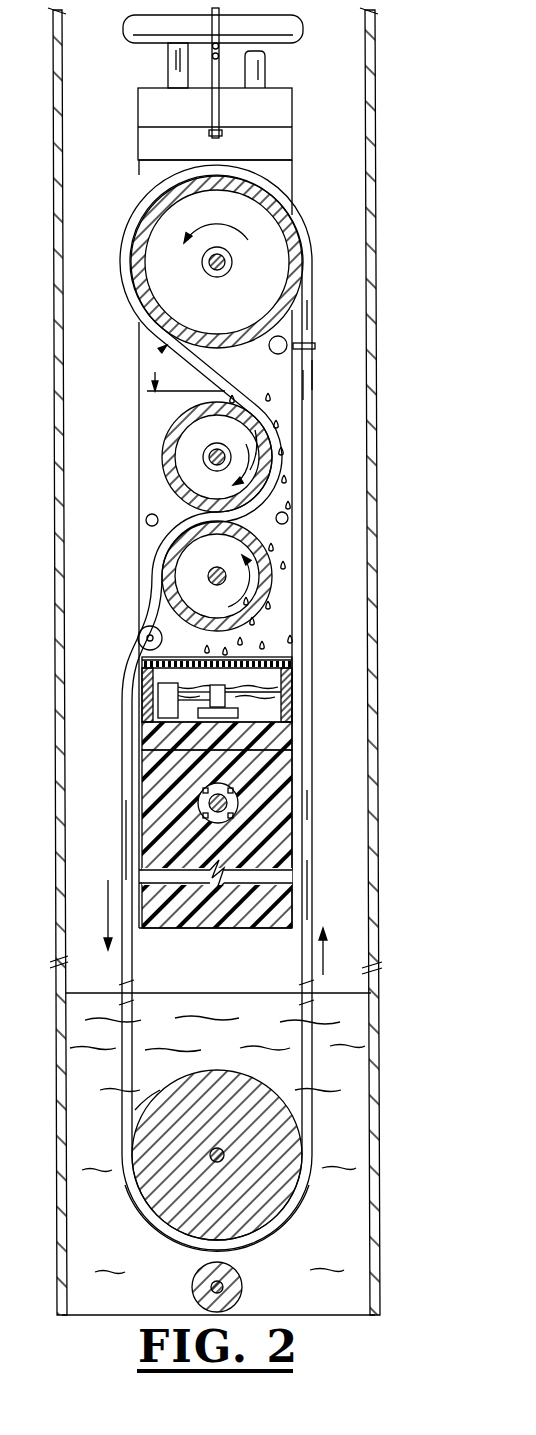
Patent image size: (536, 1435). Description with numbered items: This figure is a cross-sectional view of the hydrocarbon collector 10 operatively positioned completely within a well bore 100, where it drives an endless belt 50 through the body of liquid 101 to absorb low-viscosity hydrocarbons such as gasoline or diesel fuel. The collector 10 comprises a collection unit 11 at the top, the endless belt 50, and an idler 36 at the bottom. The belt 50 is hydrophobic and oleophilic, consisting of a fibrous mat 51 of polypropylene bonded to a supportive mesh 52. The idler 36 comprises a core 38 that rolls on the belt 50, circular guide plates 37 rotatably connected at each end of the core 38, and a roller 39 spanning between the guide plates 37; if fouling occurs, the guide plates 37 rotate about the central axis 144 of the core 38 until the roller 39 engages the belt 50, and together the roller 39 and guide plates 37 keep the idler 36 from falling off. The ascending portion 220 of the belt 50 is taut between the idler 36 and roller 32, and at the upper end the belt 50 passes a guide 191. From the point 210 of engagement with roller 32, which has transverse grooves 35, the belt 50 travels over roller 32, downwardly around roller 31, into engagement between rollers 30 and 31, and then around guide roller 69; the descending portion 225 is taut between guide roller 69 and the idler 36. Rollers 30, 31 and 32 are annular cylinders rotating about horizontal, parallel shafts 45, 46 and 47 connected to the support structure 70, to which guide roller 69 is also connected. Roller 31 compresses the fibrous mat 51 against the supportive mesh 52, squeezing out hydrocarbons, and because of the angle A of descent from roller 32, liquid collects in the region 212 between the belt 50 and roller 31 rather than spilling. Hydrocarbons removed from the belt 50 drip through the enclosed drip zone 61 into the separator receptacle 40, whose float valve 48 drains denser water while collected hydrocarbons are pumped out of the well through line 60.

The hydrocarbon collector 10 is at (112, 118).
The collection unit 11 is at (320, 805).
The roller 30 is at (187, 614).
The roller 31 is at (168, 440).
The roller 32 is at (136, 224).
The grooves 35 is at (302, 232).
The idler 36 is at (163, 1092).
The circular guide plates 37 is at (176, 1273).
The core 38 is at (303, 1128).
The roller 39 is at (228, 1276).
The separator receptacle 40 is at (285, 731).
The central shaft 45 is at (213, 569).
The central shaft 46 is at (211, 463).
The central shaft 47 is at (203, 263).
The float valve 48 is at (232, 683).
The endless belt 50 is at (213, 374).
The fibrous mat 51 is at (312, 375).
The supportive mesh 52 is at (302, 385).
The line 60 is at (264, 64).
The drip zone 61 is at (281, 637).
The guide roller 69 is at (163, 640).
The support structure 70 is at (288, 107).
The well bore 100 is at (377, 540).
The body of liquid 101 is at (220, 1002).
The central axis 144 is at (260, 1103).
The guide 191 is at (315, 346).
The point of engagement 210 is at (306, 257).
The region 212 is at (228, 420).
The ascending portion 220 is at (312, 896).
The descending portion 225 is at (123, 838).
The angle of descent A is at (186, 368).